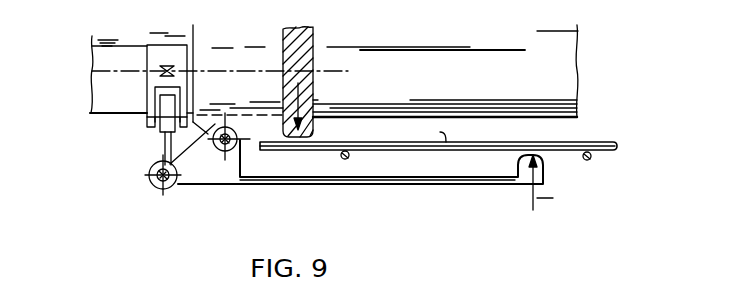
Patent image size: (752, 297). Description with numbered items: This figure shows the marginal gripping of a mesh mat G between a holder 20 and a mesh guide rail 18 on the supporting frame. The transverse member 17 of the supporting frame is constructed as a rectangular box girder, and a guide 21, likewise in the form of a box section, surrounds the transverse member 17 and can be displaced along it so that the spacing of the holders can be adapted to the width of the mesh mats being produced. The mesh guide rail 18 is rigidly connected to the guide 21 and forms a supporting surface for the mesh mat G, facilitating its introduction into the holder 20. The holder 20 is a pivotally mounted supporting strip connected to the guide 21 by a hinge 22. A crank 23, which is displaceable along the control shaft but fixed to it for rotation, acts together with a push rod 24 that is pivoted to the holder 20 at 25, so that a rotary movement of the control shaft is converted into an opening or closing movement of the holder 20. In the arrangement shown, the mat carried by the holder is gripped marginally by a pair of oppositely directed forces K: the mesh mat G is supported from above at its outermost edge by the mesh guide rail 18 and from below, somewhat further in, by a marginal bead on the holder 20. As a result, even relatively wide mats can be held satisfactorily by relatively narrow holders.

The transverse member 17 is at (477, 106).
The mesh guide rail 18 is at (305, 42).
The holder 20 is at (397, 181).
The guide 21 is at (334, 73).
The hinge 22 is at (232, 146).
The crank 23 is at (147, 88).
The push rod 24 is at (163, 150).
The pivot of push rod on holder 25 is at (158, 190).
The mesh mat G is at (435, 130).
The oppositely directed forces K is at (432, 147).